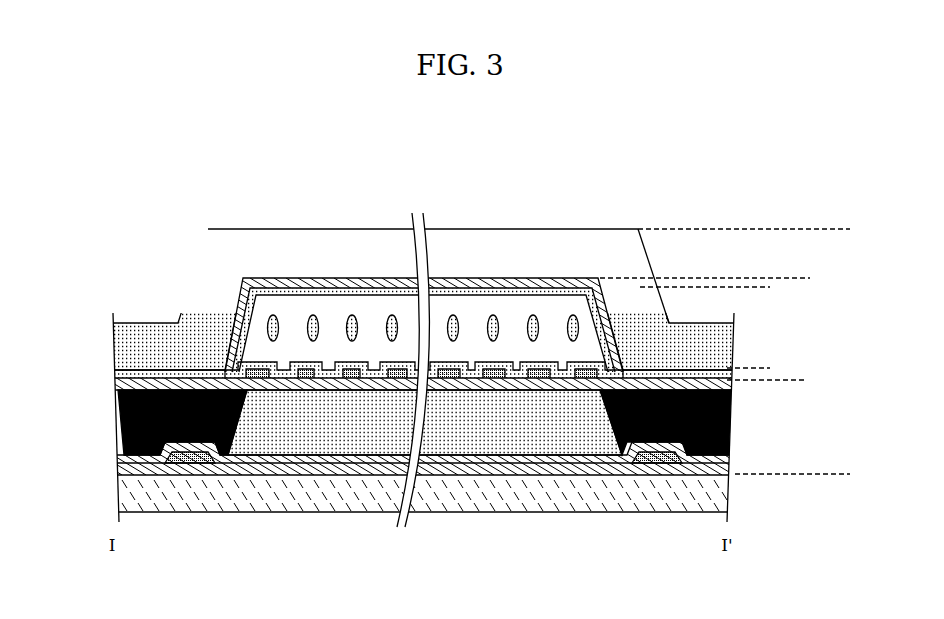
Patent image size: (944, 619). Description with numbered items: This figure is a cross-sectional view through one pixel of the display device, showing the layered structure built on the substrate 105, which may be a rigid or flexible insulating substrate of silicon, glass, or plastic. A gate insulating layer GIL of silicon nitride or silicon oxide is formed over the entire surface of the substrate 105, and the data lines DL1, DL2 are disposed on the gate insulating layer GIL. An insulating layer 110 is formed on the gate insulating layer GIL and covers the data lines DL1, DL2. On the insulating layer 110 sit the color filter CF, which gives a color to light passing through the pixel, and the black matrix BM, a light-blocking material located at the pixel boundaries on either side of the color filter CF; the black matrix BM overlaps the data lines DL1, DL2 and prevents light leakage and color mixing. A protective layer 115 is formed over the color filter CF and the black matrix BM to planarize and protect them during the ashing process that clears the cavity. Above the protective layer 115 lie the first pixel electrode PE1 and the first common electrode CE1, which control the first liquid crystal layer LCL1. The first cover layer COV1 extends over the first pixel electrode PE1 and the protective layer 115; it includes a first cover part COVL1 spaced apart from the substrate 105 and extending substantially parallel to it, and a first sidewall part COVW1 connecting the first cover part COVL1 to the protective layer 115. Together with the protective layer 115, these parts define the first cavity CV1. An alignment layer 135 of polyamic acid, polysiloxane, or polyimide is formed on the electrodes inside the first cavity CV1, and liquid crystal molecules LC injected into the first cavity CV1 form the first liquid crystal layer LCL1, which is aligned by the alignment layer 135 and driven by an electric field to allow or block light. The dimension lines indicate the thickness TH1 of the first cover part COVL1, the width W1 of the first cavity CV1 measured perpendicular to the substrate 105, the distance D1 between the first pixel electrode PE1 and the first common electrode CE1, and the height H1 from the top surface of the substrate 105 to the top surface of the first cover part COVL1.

The substrate 105 is at (128, 493).
The gate insulating layer GIL is at (122, 470).
The first data line DL1 is at (193, 457).
The second data line DL2 is at (656, 463).
The insulating layer 110 is at (132, 461).
The color filter CF is at (286, 440).
The black matrix BM is at (120, 418).
The protective layer 115 is at (120, 382).
The first pixel electrode PE1 is at (352, 378).
The first common electrode CE1 is at (132, 375).
The first cover layer COV1 is at (597, 178).
The first cover part COVL1 is at (582, 242).
The first sidewall part COVW1 is at (642, 257).
The alignment layer 135 is at (272, 287).
The liquid crystal molecules LC is at (274, 314).
The first liquid crystal layer LCL1 is at (257, 328).
The first cavity CV1 is at (287, 302).
The thickness of the first cover part TH1 is at (792, 229).
The width of the first cavity W1 is at (792, 287).
The distance between the first pixel electrode and the first common electrode D1 is at (750, 287).
The height of the first cover part H1 is at (846, 474).